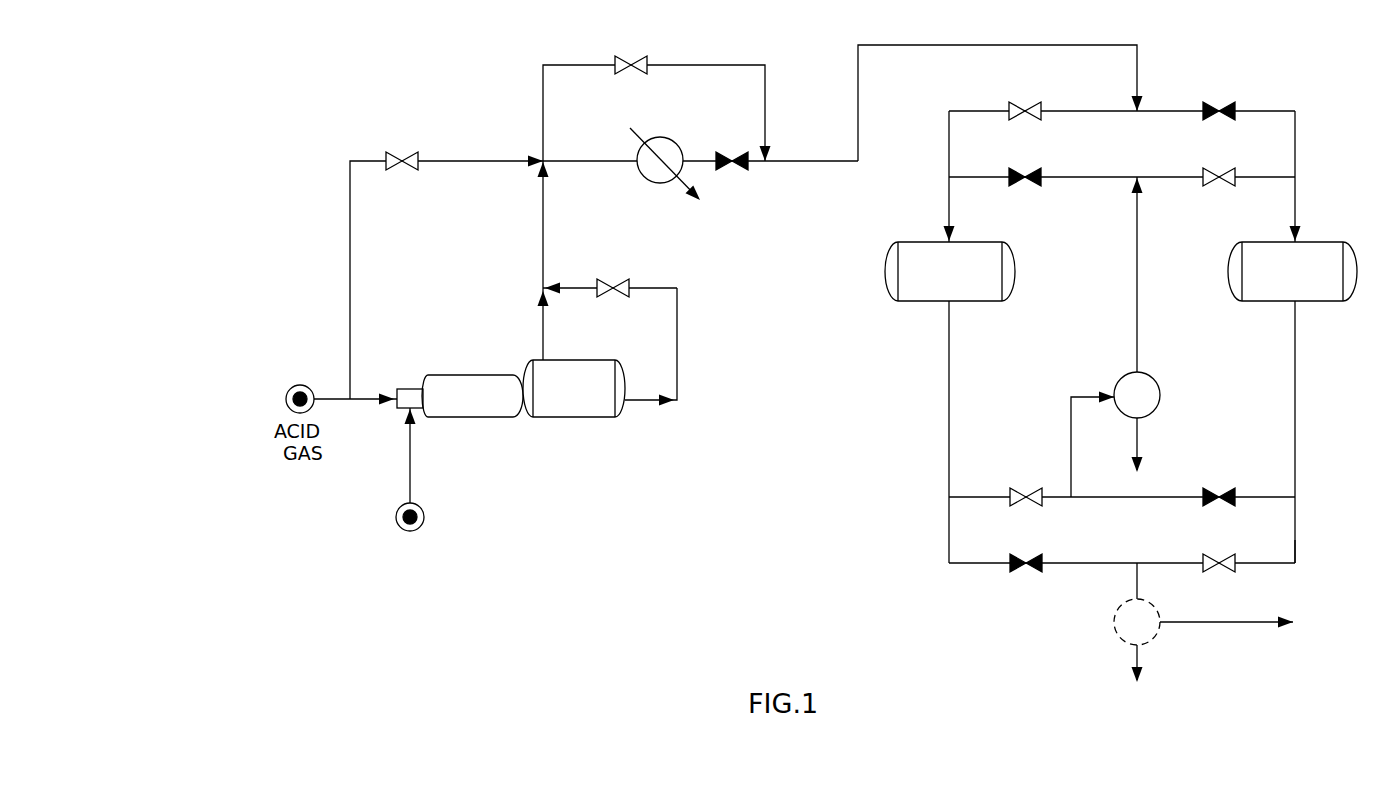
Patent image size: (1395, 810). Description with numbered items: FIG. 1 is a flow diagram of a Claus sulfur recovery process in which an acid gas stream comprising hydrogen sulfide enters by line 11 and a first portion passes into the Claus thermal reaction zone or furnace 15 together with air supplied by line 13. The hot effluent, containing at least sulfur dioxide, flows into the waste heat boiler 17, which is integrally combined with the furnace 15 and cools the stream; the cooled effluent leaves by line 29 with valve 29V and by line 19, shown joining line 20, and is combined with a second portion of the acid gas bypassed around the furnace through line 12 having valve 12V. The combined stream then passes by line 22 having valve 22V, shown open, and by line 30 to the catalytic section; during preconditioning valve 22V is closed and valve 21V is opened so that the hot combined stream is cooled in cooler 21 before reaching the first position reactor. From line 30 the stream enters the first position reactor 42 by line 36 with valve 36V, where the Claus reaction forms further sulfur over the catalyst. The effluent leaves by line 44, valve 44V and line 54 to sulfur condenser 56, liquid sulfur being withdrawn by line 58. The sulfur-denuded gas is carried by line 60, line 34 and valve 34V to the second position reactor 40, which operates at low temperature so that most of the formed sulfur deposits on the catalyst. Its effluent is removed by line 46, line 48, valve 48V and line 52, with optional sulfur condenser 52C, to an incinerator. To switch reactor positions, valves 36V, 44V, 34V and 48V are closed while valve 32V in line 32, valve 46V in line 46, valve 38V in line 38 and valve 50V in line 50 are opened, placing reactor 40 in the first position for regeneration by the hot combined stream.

The line 11 is at (343, 401).
The line 12 is at (350, 318).
The valve 12V is at (405, 152).
The line 13 is at (410, 476).
The Claus thermal reaction zone (furnace) 15 is at (457, 420).
The waste heat boiler 17 is at (585, 420).
The line 19 is at (543, 328).
The line 20 is at (543, 246).
The cooler 21 is at (672, 148).
The valve 21V is at (735, 168).
The line 22 is at (543, 115).
The valve 22V is at (633, 57).
The line 29 is at (677, 355).
The valve 29V is at (612, 279).
The line 30 is at (790, 160).
The line 32 is at (1160, 110).
The valve 32V is at (1225, 102).
The line 34 is at (1178, 177).
The valve 34V is at (1225, 186).
The line 36 is at (1062, 110).
The valve 36V is at (1020, 118).
The line 38 is at (1060, 180).
The valve 38V is at (1022, 170).
The reactor 40 is at (1318, 240).
The reactor 42 is at (1017, 277).
The line 44 is at (949, 400).
The valve 44V is at (1020, 488).
The line 46 is at (1295, 420).
The valve 46V is at (1226, 488).
The line 48 is at (1296, 538).
The valve 48V is at (1225, 556).
The line 50 is at (962, 562).
The valve 50V is at (1028, 556).
The line 52 is at (1210, 622).
The sulfur condenser 52C is at (1112, 622).
The line 54 is at (1071, 428).
The sulfur condenser 56 is at (1162, 395).
The line 58 is at (1150, 432).
The line 60 is at (1137, 300).